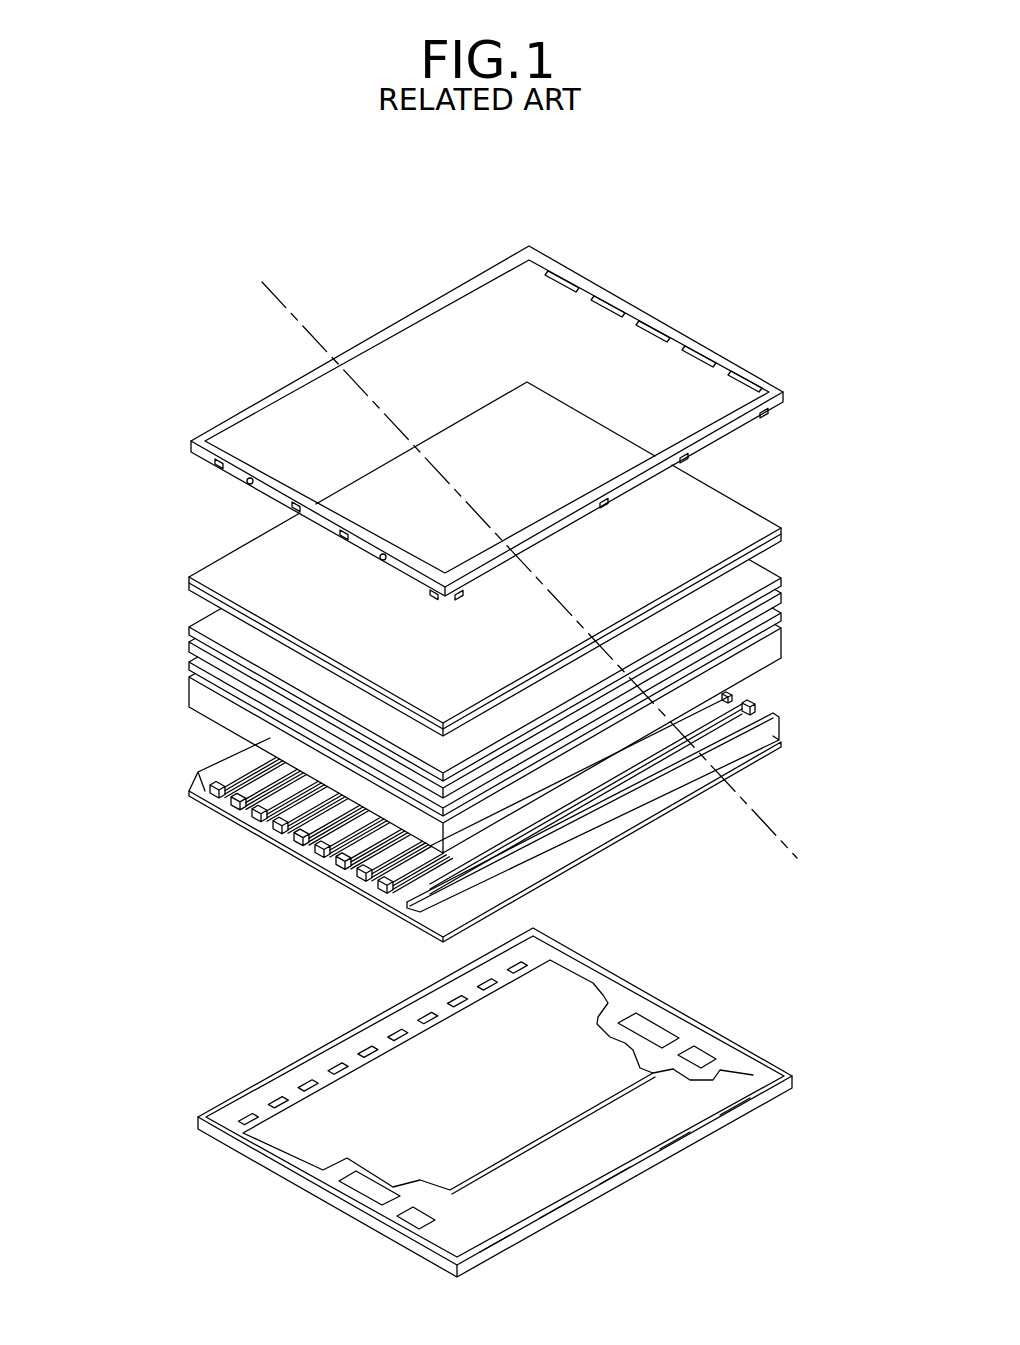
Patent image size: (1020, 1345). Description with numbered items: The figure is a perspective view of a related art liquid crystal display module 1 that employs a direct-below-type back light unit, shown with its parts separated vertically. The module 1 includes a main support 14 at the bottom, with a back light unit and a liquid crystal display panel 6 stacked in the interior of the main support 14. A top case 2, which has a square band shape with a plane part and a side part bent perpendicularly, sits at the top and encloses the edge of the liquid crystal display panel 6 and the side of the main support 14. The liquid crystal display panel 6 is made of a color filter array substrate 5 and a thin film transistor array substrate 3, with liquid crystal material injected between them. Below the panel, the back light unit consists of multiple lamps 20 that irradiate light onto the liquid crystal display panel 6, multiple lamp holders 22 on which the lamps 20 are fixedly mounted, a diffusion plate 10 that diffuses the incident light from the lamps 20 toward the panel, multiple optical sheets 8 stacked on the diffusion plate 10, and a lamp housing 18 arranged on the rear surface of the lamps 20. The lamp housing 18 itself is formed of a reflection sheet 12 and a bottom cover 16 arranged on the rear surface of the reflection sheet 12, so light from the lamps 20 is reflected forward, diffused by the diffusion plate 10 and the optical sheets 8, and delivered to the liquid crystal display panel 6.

The liquid crystal display module 1 is at (741, 246).
The top case 2 is at (763, 381).
The thin film transistor array substrate 3 is at (189, 590).
The color filter array substrate 5 is at (189, 577).
The liquid crystal display panel 6 is at (434, 559).
The optical sheets 8 is at (784, 617).
The diffusion plate 10 is at (781, 643).
The reflection sheet 12 is at (757, 710).
The main support 14 is at (727, 1037).
The bottom cover 16 is at (775, 735).
The lamp housing 18 is at (658, 792).
The lamps 20 is at (533, 836).
The lamp holders 22 is at (397, 907).